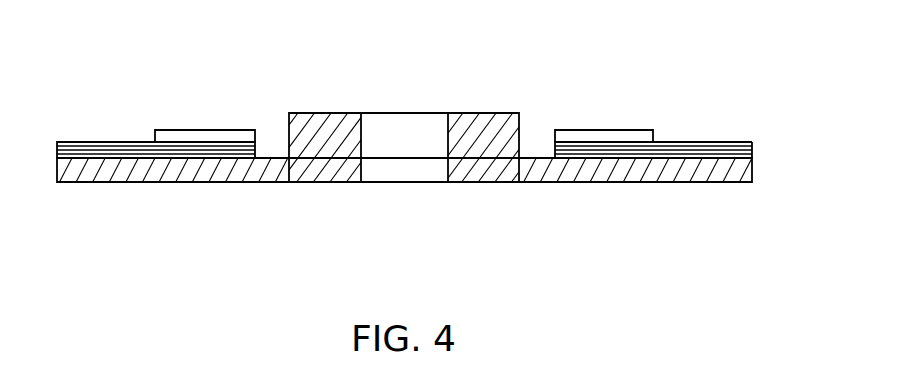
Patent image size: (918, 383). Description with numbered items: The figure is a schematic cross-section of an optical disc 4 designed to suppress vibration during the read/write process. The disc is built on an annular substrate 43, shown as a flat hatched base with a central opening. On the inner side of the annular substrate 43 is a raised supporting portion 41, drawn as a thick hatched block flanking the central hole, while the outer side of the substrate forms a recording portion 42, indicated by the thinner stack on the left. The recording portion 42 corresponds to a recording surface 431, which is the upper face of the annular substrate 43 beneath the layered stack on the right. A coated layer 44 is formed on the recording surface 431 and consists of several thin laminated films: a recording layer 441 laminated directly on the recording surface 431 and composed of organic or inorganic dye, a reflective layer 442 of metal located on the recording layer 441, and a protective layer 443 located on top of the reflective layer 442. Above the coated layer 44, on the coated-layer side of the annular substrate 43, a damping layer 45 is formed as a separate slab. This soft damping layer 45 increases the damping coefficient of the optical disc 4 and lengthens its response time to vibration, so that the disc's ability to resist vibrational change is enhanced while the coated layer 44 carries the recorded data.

The optical disc 4 is at (39, 56).
The supporting portion 41 is at (519, 98).
The recording portion 42 is at (255, 98).
The annular substrate 43 is at (643, 175).
The recording surface 431 is at (690, 157).
The coated layer 44 is at (727, 152).
The recording layer 441 is at (752, 156).
The reflective layer 442 is at (752, 150).
The protective layer 443 is at (752, 143).
The damping layer 45 is at (608, 132).